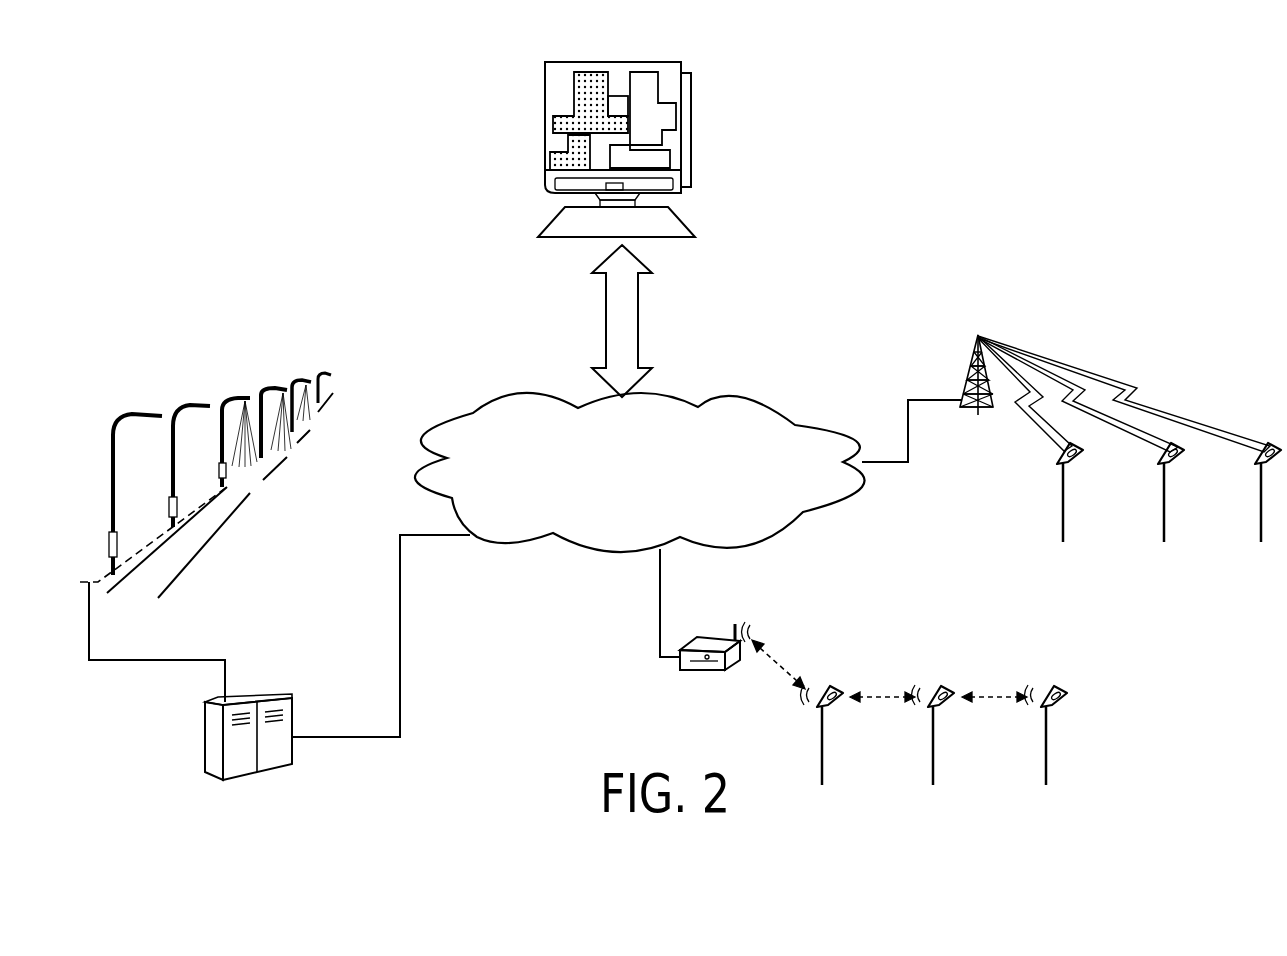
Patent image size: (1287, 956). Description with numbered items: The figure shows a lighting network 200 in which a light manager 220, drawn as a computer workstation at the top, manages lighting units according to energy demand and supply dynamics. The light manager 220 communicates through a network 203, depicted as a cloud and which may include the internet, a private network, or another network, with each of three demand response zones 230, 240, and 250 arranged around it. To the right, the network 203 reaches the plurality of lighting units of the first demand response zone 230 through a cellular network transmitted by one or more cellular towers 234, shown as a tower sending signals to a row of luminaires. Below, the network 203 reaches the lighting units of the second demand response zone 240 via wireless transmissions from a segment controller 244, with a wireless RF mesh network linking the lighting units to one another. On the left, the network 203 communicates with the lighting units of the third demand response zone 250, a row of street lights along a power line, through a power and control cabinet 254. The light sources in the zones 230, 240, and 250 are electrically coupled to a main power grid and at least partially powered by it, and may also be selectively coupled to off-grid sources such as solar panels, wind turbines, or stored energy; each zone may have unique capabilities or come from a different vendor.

The lighting network 200 is at (962, 88).
The light manager 220 is at (545, 93).
The network 203 is at (740, 398).
The cellular tower 234 is at (972, 372).
The first demand response zone 230 is at (1216, 544).
The segment controller 244 is at (700, 640).
The second demand response zone 240 is at (1082, 743).
The third demand response zone 250 is at (203, 377).
The power and control cabinet 254 is at (205, 742).